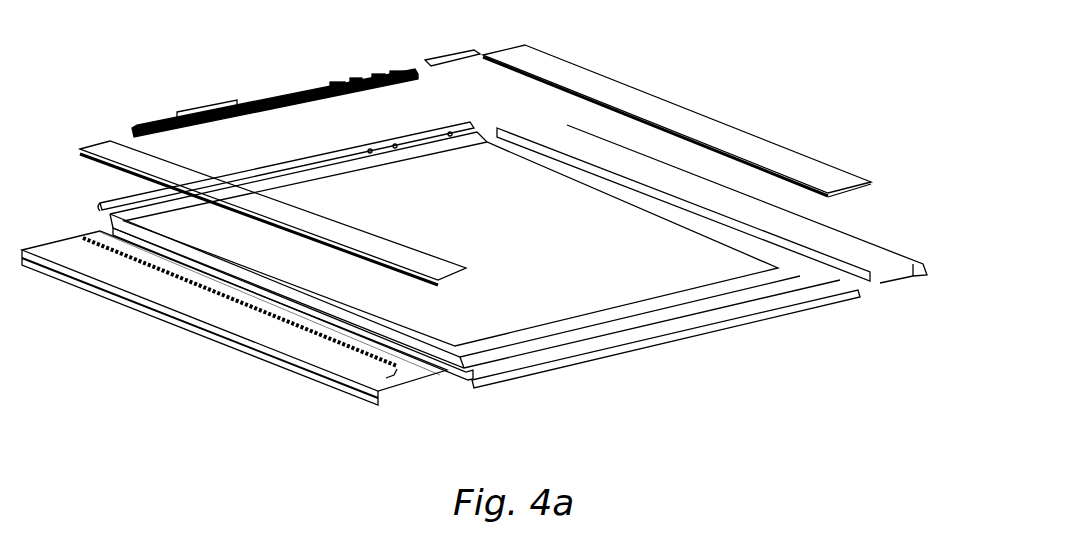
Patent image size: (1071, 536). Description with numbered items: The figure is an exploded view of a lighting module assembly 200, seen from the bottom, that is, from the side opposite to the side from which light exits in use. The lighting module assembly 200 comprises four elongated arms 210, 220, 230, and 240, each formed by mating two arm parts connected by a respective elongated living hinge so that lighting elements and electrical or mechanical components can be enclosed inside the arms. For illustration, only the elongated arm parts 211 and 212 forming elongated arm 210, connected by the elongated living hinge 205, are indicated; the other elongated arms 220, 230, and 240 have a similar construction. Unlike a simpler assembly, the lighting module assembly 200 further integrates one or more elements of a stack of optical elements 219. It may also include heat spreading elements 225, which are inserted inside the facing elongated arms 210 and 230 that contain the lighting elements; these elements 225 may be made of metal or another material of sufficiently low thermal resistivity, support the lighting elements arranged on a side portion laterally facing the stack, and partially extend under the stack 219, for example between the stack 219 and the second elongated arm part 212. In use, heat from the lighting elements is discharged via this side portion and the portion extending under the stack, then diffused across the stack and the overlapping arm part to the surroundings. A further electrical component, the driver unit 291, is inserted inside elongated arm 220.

The lighting module assembly 200 is at (816, 117).
The elongated living hinge 205 is at (82, 238).
The elongated arm 210 is at (480, 407).
The elongated arm part 211 is at (440, 373).
The second elongated arm part 212 is at (390, 377).
The stack of optical elements 219 is at (520, 258).
The elongated arm 220 is at (475, 126).
The heat spreading elements 225 is at (125, 152).
The elongated arm 230 is at (889, 284).
The elongated arm 240 is at (705, 335).
The driver unit 291 is at (308, 93).